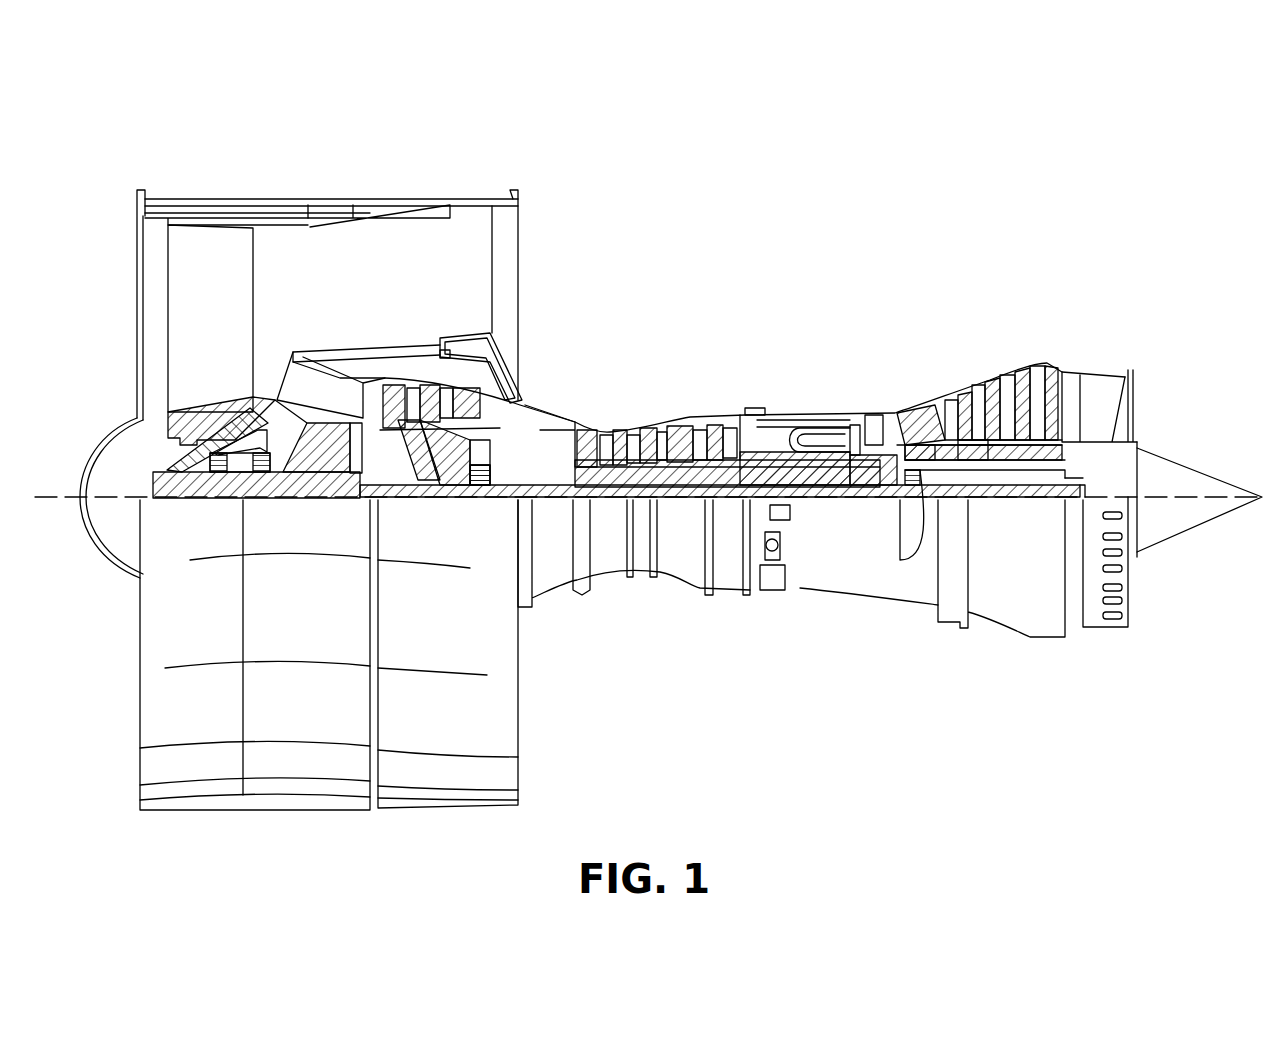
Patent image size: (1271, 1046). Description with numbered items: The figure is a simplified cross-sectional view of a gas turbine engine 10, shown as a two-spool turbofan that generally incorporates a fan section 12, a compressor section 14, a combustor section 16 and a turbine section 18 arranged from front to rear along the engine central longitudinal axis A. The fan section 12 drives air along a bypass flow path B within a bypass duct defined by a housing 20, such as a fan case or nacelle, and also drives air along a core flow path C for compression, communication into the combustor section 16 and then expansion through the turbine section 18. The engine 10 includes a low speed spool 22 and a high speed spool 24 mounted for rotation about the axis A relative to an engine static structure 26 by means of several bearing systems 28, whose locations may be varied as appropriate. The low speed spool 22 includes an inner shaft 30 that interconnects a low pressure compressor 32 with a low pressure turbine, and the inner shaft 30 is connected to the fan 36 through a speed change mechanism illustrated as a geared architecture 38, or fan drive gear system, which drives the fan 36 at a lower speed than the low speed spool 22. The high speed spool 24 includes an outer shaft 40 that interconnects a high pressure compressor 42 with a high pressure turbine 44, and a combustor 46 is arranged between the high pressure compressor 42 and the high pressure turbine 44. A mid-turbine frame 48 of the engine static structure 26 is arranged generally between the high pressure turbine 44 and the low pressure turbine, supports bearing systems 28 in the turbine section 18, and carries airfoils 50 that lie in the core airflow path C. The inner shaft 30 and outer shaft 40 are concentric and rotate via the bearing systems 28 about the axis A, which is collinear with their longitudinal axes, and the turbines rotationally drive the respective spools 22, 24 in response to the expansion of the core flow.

The gas turbine engine 10 is at (810, 240).
The fan section 12 is at (258, 152).
The compressor section 14 is at (568, 392).
The combustor section 16 is at (800, 372).
The turbine section 18 is at (968, 328).
The housing 20 is at (318, 205).
The low speed spool 22 is at (686, 507).
The high speed spool 24 is at (712, 415).
The engine static structure 26 is at (725, 597).
The bearing systems 28 is at (472, 490).
The inner shaft 30 is at (545, 505).
The low pressure compressor 32 is at (438, 352).
The fan 36 is at (217, 325).
The geared architecture 38 is at (323, 492).
The outer shaft 40 is at (810, 498).
The high pressure compressor 42 is at (668, 428).
The high pressure turbine 44 is at (870, 418).
The combustor 46 is at (803, 428).
The mid-turbine frame 48 is at (918, 402).
The airfoils 50 is at (970, 498).
The engine central longitudinal axis A is at (1197, 497).
The bypass flow path B is at (280, 276).
The core flow path C is at (330, 392).